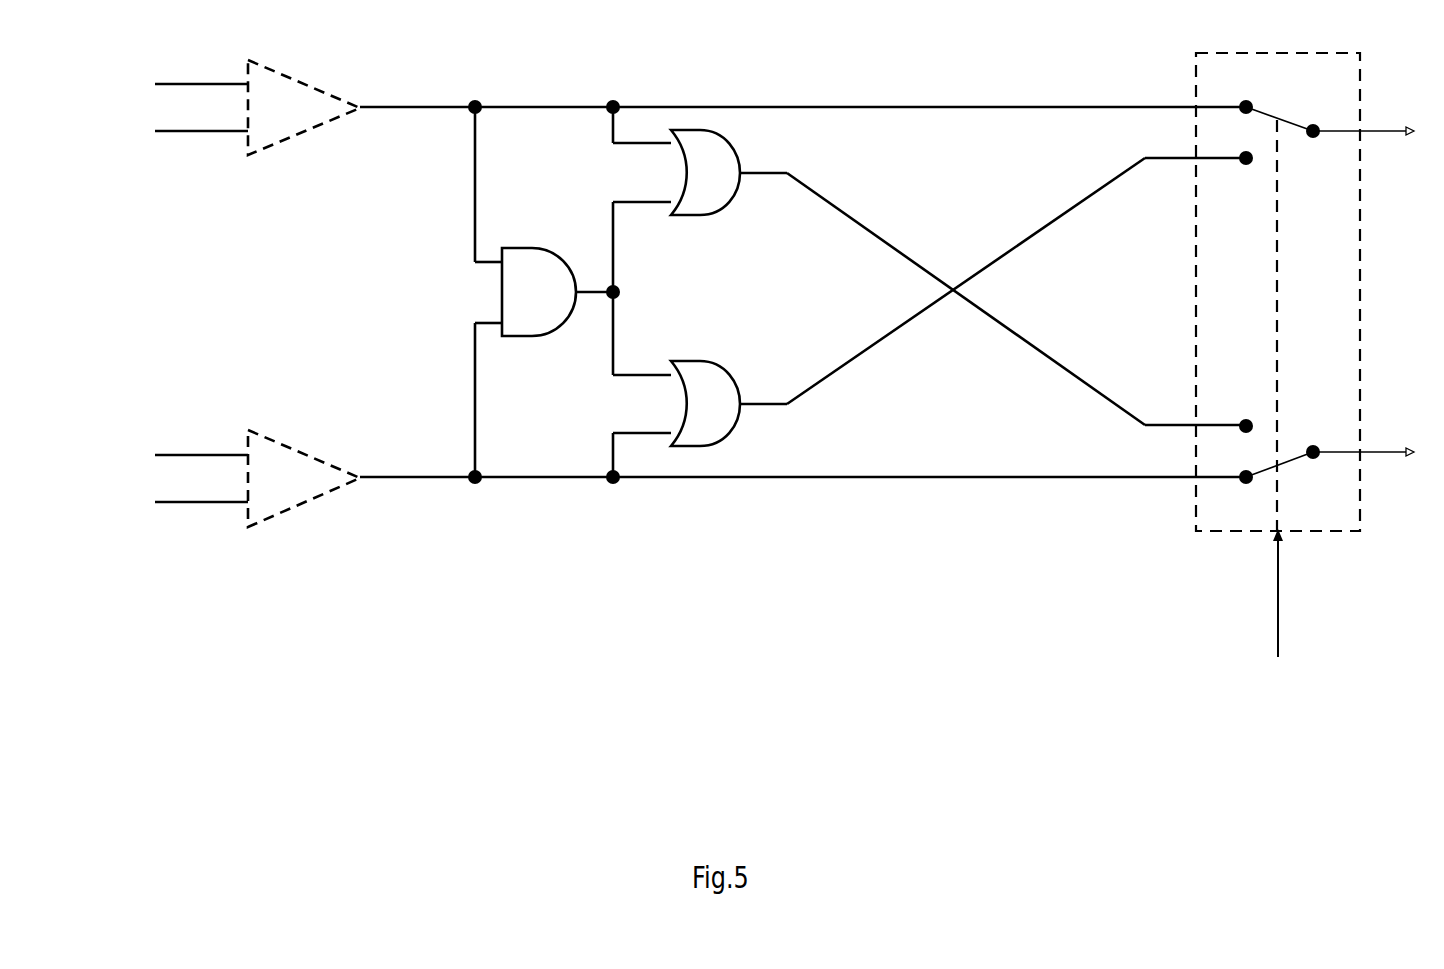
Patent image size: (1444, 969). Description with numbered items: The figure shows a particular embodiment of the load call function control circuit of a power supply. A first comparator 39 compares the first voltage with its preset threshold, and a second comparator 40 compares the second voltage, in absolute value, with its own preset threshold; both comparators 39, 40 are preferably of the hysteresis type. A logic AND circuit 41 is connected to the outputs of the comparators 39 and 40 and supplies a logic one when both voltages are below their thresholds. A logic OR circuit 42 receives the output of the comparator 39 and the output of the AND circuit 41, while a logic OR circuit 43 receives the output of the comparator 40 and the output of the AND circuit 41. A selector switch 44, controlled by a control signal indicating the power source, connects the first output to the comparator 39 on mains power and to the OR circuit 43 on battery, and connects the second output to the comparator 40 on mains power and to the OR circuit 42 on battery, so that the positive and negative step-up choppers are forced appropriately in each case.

The comparator 39 is at (287, 143).
The comparator 40 is at (290, 513).
The logic AND circuit 41 is at (532, 338).
The logic OR circuit 42 is at (712, 215).
The logic OR circuit 43 is at (714, 446).
The selector switch 44 is at (1291, 54).